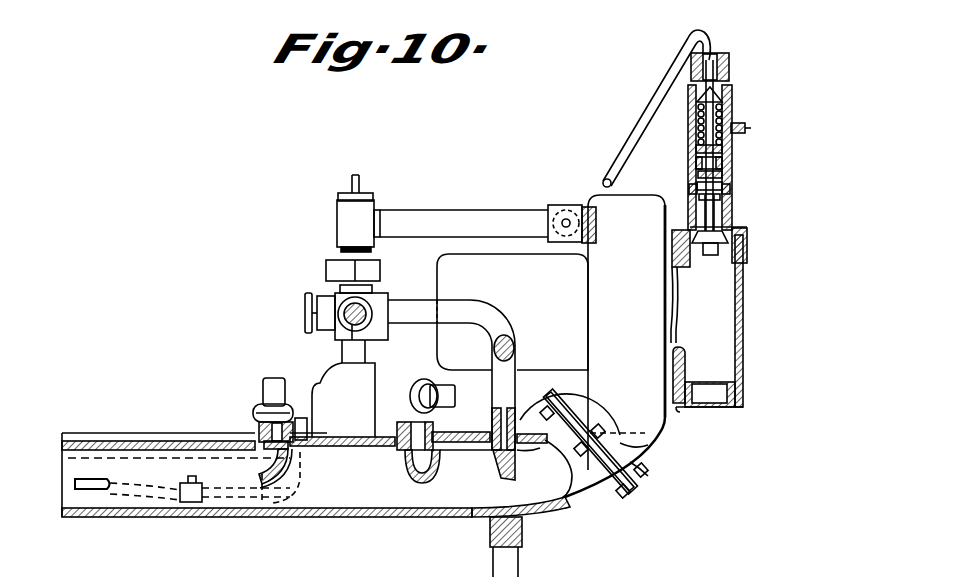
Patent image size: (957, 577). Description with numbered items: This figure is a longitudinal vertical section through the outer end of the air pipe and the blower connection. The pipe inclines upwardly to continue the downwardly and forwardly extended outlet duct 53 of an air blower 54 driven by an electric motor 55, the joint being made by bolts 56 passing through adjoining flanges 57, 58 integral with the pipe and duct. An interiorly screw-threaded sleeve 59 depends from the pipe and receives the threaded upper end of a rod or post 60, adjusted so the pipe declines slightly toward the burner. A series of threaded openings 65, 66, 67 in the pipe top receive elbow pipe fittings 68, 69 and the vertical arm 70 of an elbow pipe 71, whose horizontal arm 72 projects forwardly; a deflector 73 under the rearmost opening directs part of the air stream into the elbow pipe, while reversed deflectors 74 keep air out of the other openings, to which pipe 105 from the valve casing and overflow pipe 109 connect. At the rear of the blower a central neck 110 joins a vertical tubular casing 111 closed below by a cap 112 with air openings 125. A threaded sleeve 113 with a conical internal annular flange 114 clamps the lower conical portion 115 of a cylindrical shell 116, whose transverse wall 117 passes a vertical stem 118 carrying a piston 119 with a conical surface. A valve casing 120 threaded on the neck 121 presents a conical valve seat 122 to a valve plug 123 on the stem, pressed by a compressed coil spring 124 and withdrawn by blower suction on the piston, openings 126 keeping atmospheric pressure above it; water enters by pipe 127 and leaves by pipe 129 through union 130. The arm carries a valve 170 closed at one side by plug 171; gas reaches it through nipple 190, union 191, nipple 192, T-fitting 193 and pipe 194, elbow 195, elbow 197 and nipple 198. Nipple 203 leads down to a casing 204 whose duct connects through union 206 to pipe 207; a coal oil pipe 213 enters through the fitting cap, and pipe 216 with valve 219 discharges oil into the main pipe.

The outlet duct 53 is at (630, 450).
The air blower 54 is at (626, 332).
The electric motor 55 is at (512, 312).
The bolts 56 is at (604, 421).
The flange 57 is at (630, 497).
The flange 58 is at (643, 475).
The interiorly screw-threaded sleeve 59 is at (522, 528).
The rod or post 60 is at (520, 554).
The foremost opening 65 is at (257, 458).
The intermediate opening 66 is at (407, 455).
The rearmost opening 67 is at (520, 453).
The elbow pipe fitting 68 is at (262, 460).
The elbow pipe fitting 69 is at (408, 412).
The vertical arm 70 is at (508, 394).
The elbow pipe 71 is at (512, 324).
The horizontal arm 72 is at (425, 311).
The deflector 73 is at (500, 470).
The deflectors 74 is at (262, 490).
The pipe 105 is at (442, 398).
The pipe 109 is at (266, 388).
The central neck 110 is at (678, 318).
The vertical tubular casing 111 is at (743, 323).
The cap 112 is at (681, 410).
The internally screw-threaded sleeve 113 is at (747, 251).
The internal annular flange 114 is at (745, 234).
The lower conical portion 115 is at (740, 222).
The vertical cylindrical shell 116 is at (733, 184).
The transverse wall 117 is at (733, 172).
The vertical stem 118 is at (690, 181).
The piston 119 is at (703, 255).
The valve casing 120 is at (728, 150).
The externally screw-threaded neck 121 is at (692, 168).
The conical valve seat 122 is at (732, 87).
The valve plug 123 is at (725, 99).
The compressed coil spring 124 is at (700, 130).
The openings 125 is at (723, 407).
The openings 126 is at (690, 193).
The pipe 127 is at (748, 128).
The pipe 129 is at (653, 100).
The union 130 is at (730, 62).
The valve 170 is at (385, 298).
The externally screw-threaded plug 171 is at (352, 322).
The nipple 190 is at (340, 289).
The union 191 is at (326, 270).
The nipple 192 is at (340, 249).
The T-fitting 193 is at (337, 220).
The pipe 194 is at (464, 223).
The elbow 195 is at (549, 207).
The elbow 197 is at (582, 208).
The nipple 198 is at (597, 223).
The nipple 203 is at (340, 354).
The casing 204 is at (343, 400).
The union 206 is at (302, 418).
The pipe 207 is at (137, 438).
The pipe 213 is at (352, 184).
The pipe 216 is at (92, 484).
The valve 219 is at (198, 502).